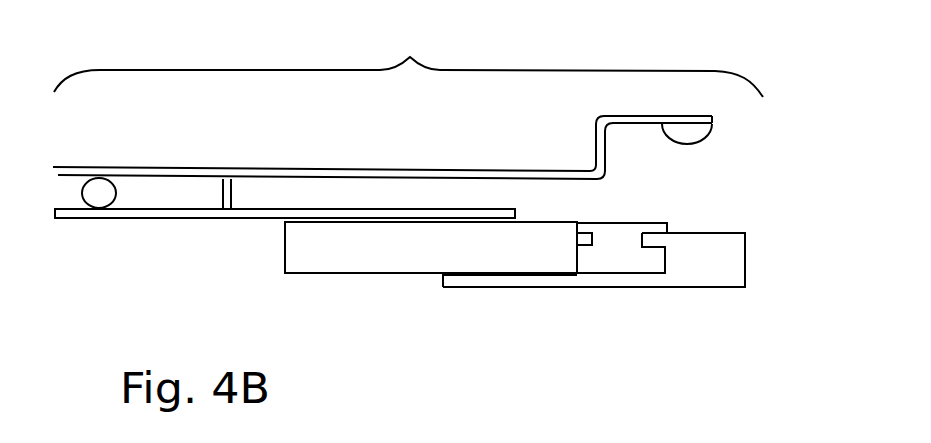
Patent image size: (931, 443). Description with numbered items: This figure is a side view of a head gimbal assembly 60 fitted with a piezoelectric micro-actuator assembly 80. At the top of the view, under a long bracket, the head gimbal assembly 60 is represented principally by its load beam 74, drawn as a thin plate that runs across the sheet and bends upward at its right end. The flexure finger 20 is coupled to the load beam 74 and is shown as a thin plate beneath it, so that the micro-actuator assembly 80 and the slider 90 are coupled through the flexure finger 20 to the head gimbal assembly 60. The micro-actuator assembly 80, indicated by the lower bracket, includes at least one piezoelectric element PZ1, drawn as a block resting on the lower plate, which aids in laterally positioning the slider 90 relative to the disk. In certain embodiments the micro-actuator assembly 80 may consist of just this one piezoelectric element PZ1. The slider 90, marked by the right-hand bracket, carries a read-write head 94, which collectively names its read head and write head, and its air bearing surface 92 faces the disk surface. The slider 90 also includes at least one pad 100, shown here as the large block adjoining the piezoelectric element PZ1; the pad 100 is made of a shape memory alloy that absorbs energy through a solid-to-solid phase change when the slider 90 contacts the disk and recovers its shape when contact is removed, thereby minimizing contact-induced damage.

The head gimbal assembly 60 is at (408, 55).
The load beam 74 is at (265, 167).
The flexure finger 20 is at (98, 218).
The pad 100 is at (438, 247).
The piezoelectric element PZ1 is at (608, 223).
The slider 90 is at (793, 232).
The micro-actuator assembly 80 is at (662, 298).
The air bearing surface 92 is at (687, 287).
The read-write head 94 is at (745, 287).